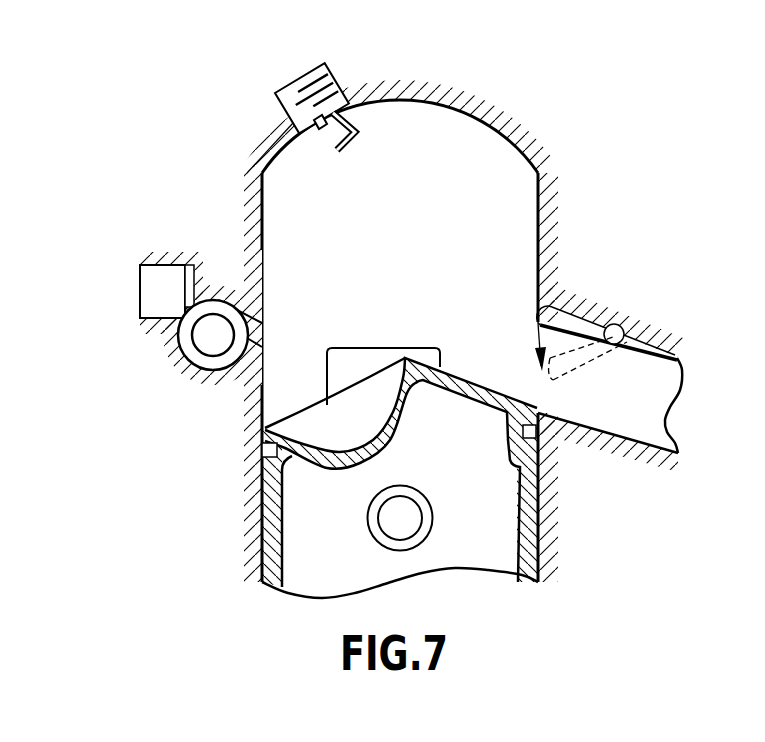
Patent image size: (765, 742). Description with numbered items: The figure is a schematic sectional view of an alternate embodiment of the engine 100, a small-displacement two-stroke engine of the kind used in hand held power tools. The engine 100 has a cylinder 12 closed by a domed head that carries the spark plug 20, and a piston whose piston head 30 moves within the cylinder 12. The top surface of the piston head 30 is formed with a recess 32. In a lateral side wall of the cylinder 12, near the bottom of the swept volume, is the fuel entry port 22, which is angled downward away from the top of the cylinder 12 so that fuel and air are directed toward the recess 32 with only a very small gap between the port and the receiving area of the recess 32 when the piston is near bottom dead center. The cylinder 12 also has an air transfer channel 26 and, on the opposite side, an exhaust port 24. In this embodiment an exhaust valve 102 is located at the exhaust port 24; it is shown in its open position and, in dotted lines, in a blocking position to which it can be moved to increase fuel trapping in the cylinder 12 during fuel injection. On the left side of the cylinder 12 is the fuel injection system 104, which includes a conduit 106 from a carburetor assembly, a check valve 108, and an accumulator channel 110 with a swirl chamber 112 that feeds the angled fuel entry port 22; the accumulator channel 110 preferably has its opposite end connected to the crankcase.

The engine 100 is at (226, 126).
The cylinder 12 is at (432, 97).
The spark plug 20 is at (291, 93).
The fuel entry port 22 is at (265, 334).
The exhaust port 24 is at (590, 422).
The air transfer channel 26 is at (362, 350).
The piston head 30 is at (400, 478).
The recess 32 is at (384, 418).
The exhaust valve 102 is at (580, 308).
The fuel injection system 104 is at (136, 279).
The conduit 106 is at (157, 320).
The check valve 108 is at (184, 262).
The accumulator channel 110 is at (207, 348).
The swirl chamber 112 is at (213, 372).